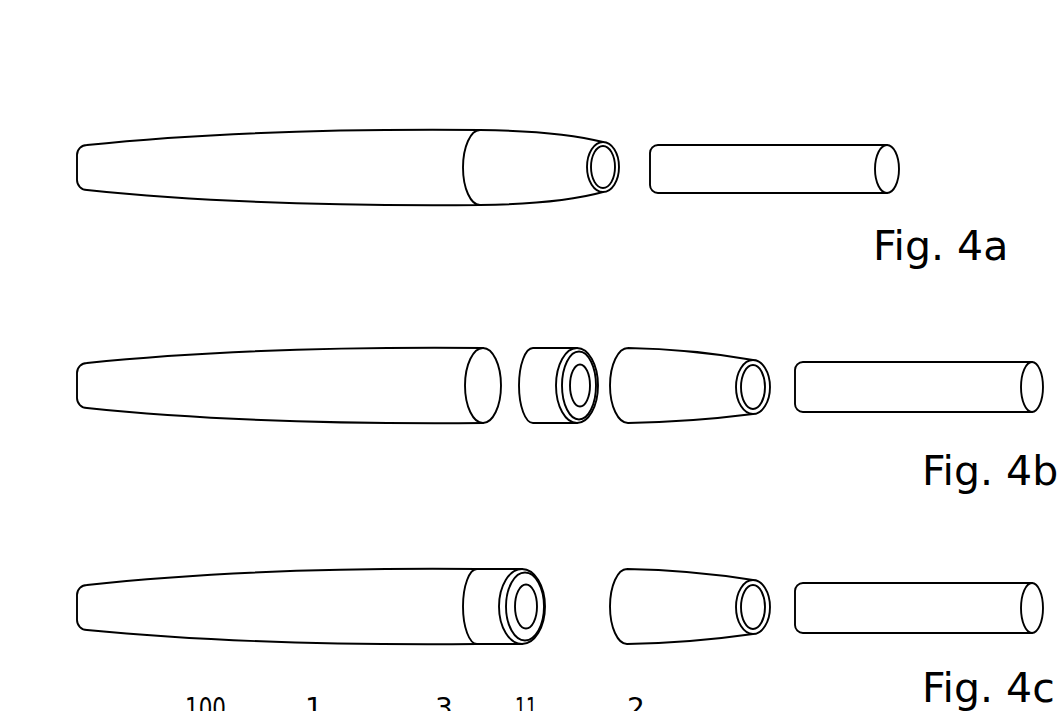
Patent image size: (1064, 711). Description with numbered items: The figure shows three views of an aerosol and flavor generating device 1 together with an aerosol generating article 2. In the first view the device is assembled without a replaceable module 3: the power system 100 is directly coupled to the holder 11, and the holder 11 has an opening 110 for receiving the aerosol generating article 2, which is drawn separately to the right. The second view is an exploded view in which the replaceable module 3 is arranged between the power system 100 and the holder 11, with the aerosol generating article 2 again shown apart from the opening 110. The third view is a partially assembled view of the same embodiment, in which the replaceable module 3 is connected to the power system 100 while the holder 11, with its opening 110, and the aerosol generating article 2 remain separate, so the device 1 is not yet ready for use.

In FIG. 4A, the aerosol and flavor generating device 1 is at (348, 118).
In FIG. 4B, the aerosol and flavor generating device 1 is at (423, 337).
In FIG. 4C, the aerosol and flavor generating device 1 is at (423, 558).
In FIG. 4A, the power system 100 is at (183, 165).
In FIG. 4B, the power system 100 is at (262, 385).
In FIG. 4C, the power system 100 is at (260, 602).
In FIG. 4A, the holder 11 is at (538, 121).
In FIG. 4B, the holder 11 is at (686, 341).
In FIG. 4C, the holder 11 is at (686, 560).
In FIG. 4A, the opening 110 is at (607, 162).
In FIG. 4B, the opening 110 is at (755, 383).
In FIG. 4C, the opening 110 is at (755, 603).
In FIG. 4A, the aerosol generating article 2 is at (778, 163).
In FIG. 4B, the aerosol generating article 2 is at (855, 383).
In FIG. 4C, the aerosol generating article 2 is at (853, 603).
In FIG. 4B, the replaceable module 3 is at (535, 387).
In FIG. 4C, the replaceable module 3 is at (495, 603).